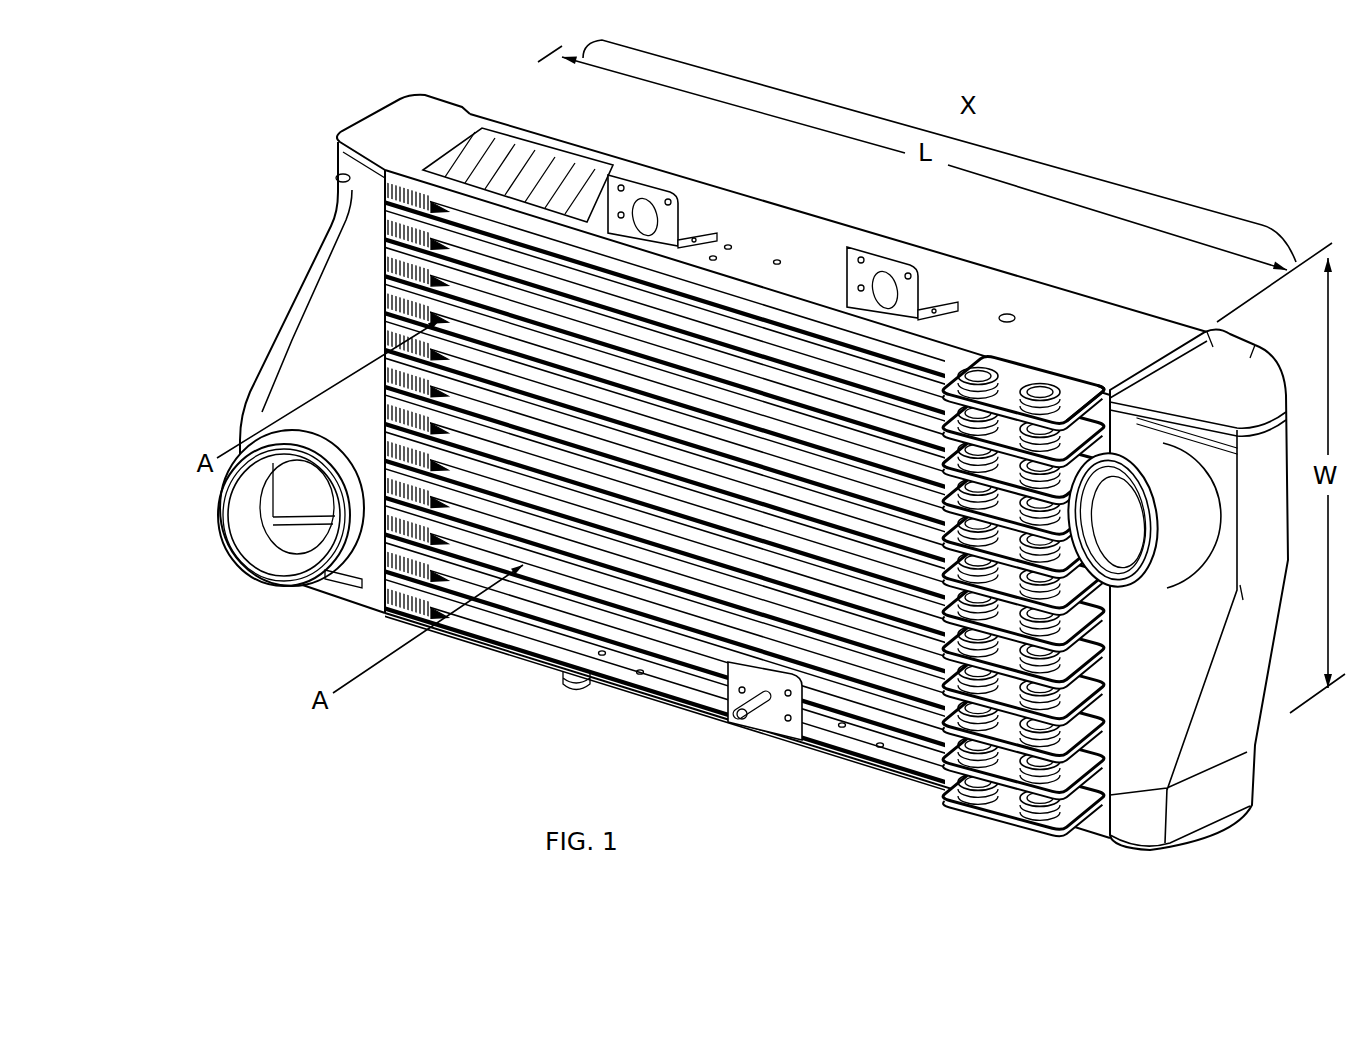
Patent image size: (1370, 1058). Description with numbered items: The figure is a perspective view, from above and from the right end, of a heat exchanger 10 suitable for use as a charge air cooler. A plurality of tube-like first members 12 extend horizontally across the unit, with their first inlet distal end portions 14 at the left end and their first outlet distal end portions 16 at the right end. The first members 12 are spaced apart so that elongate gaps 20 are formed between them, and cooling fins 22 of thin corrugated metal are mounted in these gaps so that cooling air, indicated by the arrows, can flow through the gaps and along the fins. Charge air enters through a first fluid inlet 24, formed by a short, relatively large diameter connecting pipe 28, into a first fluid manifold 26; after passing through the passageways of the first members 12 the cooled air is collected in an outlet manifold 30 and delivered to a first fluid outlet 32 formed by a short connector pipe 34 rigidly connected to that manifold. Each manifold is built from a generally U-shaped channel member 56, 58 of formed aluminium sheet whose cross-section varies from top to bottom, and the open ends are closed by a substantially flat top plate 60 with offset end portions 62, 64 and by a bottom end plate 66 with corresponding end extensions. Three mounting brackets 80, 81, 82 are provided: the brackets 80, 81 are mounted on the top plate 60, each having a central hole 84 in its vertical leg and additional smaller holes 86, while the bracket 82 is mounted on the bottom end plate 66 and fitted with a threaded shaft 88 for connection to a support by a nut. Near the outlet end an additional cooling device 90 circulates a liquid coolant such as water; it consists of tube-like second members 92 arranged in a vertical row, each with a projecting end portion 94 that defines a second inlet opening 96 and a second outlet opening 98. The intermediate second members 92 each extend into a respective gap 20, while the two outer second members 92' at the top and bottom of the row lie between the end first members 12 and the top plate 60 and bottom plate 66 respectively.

The heat exchanger 10 is at (925, 228).
The tube-like first members 12 is at (698, 677).
The first inlet distal end portions 14 is at (385, 310).
The first outlet distal end portions 16 is at (1142, 820).
The elongate gaps 20 is at (523, 590).
The cooling fins 22 is at (387, 253).
The first fluid inlet 24 is at (272, 548).
The first fluid manifold 26 is at (327, 322).
The connecting pipe 28 is at (222, 527).
The outlet manifold 30 is at (1235, 713).
The first fluid outlet 32 is at (1113, 530).
The connector pipe 34 is at (1180, 530).
The U-shaped channel member 56 is at (300, 368).
The U-shaped channel member 58 is at (1258, 667).
The top plate 60 is at (1053, 303).
The offset end portion 62 is at (398, 133).
The offset end portion 64 is at (1233, 372).
The bottom end plate 66 is at (853, 740).
The mounting bracket 80 is at (650, 193).
The mounting bracket 81 is at (877, 263).
The mounting bracket 82 is at (772, 722).
The central hole 84 is at (895, 296).
The smaller holes 86 is at (680, 193).
The threaded shaft 88 is at (742, 727).
The cooling device 90 is at (937, 822).
The tube-like second members 92 is at (959, 783).
The outer second members 92' is at (1023, 596).
The end portion 94 is at (1105, 392).
The second inlet opening 96 is at (1043, 387).
The second outlet opening 98 is at (980, 363).